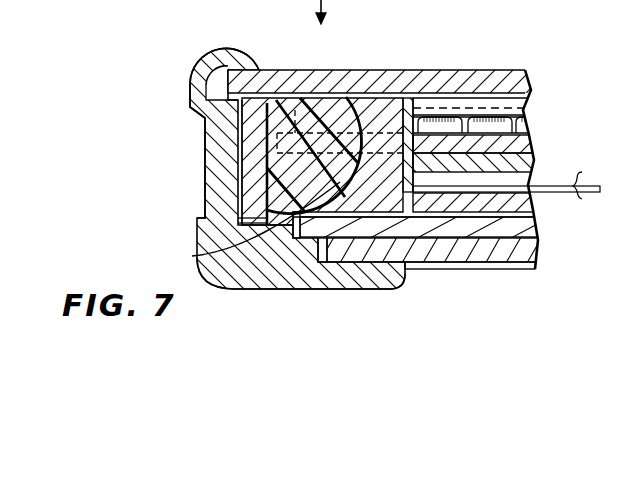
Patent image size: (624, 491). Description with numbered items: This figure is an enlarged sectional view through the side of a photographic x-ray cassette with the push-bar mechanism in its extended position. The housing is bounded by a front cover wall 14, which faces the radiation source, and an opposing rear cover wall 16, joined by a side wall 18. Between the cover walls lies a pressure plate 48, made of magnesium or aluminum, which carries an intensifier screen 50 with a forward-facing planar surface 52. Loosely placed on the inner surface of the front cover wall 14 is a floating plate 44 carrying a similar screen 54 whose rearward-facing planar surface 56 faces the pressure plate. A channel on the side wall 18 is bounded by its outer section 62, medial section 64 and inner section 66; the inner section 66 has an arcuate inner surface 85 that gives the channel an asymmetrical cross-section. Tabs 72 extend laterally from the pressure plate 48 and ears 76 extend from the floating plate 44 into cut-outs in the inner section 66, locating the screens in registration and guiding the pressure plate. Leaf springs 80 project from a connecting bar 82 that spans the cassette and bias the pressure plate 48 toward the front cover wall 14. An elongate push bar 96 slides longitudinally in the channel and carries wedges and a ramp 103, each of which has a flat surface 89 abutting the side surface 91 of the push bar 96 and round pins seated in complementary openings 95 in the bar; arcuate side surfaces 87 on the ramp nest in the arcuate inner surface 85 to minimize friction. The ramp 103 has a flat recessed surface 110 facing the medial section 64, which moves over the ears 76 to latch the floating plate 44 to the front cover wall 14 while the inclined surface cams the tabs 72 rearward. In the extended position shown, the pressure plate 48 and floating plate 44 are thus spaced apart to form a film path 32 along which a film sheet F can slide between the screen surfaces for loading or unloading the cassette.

The front cover wall 14 is at (432, 257).
The rear cover wall 16 is at (397, 70).
The side wall 18 is at (193, 48).
The film path 32 is at (512, 183).
The floating plate 44 is at (474, 227).
The pressure plate 48 is at (490, 127).
The intensifier screen 50 is at (530, 155).
The planar surface 52 is at (530, 170).
The screen 54 is at (518, 250).
The planar surface 56 is at (538, 194).
The outer section 62 is at (213, 118).
The medial section 64 is at (250, 282).
The inner section 66 is at (362, 97).
The tabs 72 is at (291, 88).
The ears 76 is at (308, 220).
The leaf springs 80 is at (531, 120).
The connecting bar 82 is at (442, 103).
The arcuate inner surface 85 is at (212, 257).
The arcuate side surfaces 87 is at (284, 96).
The flat surfaces 89 is at (203, 80).
The side surface 91 is at (283, 88).
The openings 95 is at (235, 151).
The push bar 96 is at (235, 200).
The ramp 103 is at (240, 150).
The flat recessed surface 110 is at (338, 213).
The film sheet F is at (589, 176).